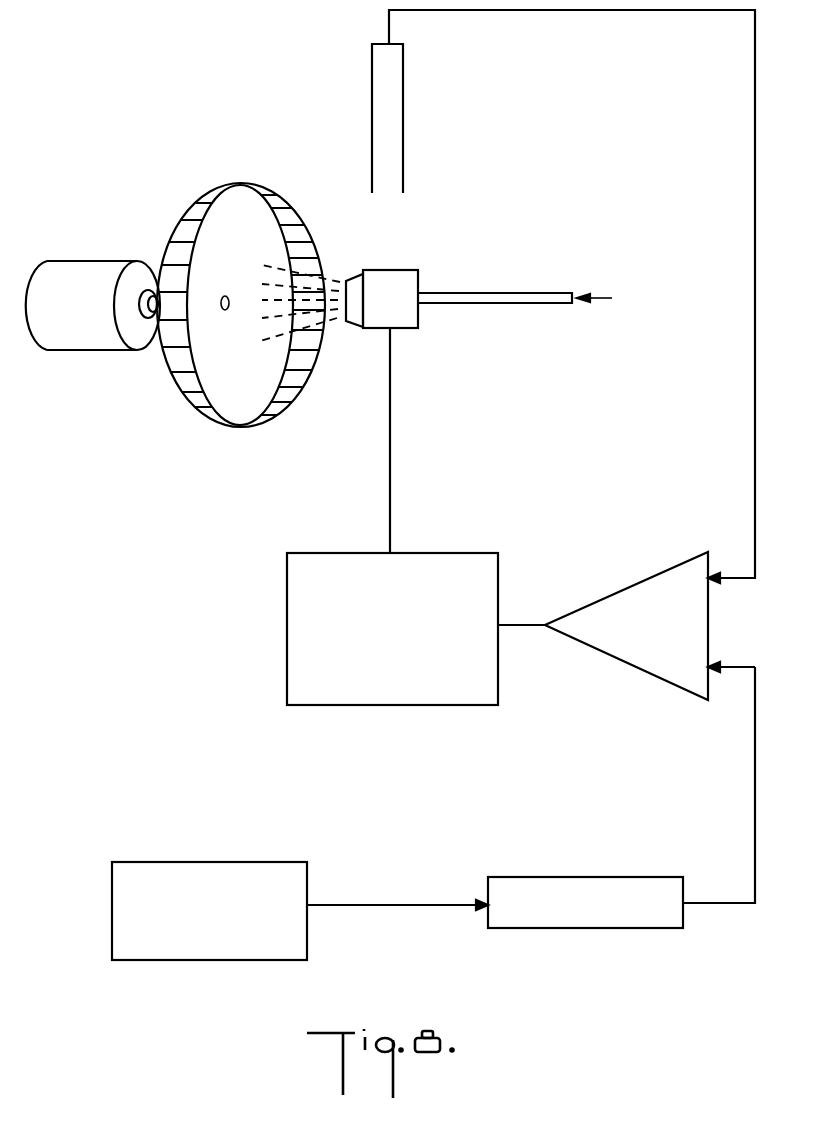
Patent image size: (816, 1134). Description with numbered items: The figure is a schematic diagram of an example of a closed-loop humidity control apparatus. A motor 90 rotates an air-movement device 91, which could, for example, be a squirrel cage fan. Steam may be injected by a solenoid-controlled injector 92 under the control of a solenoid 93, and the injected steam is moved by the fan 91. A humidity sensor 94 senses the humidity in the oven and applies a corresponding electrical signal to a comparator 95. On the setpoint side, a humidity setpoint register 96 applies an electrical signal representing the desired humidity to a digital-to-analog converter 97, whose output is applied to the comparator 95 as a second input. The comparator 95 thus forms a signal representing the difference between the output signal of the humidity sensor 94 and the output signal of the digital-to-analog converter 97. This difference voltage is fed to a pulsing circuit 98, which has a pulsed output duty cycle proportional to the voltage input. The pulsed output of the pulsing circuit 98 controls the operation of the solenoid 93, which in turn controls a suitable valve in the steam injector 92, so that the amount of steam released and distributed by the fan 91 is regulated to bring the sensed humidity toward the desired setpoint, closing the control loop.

The motor 90 is at (77, 350).
The air-movement device 91 is at (277, 420).
The solenoid-controlled injector 92 is at (350, 327).
The solenoid 93 is at (420, 318).
The humidity sensor 94 is at (405, 114).
The comparator 95 is at (656, 575).
The humidity setpoint register 96 is at (162, 860).
The digital-to-analog converter 97 is at (573, 877).
The pulsing circuit 98 is at (491, 553).